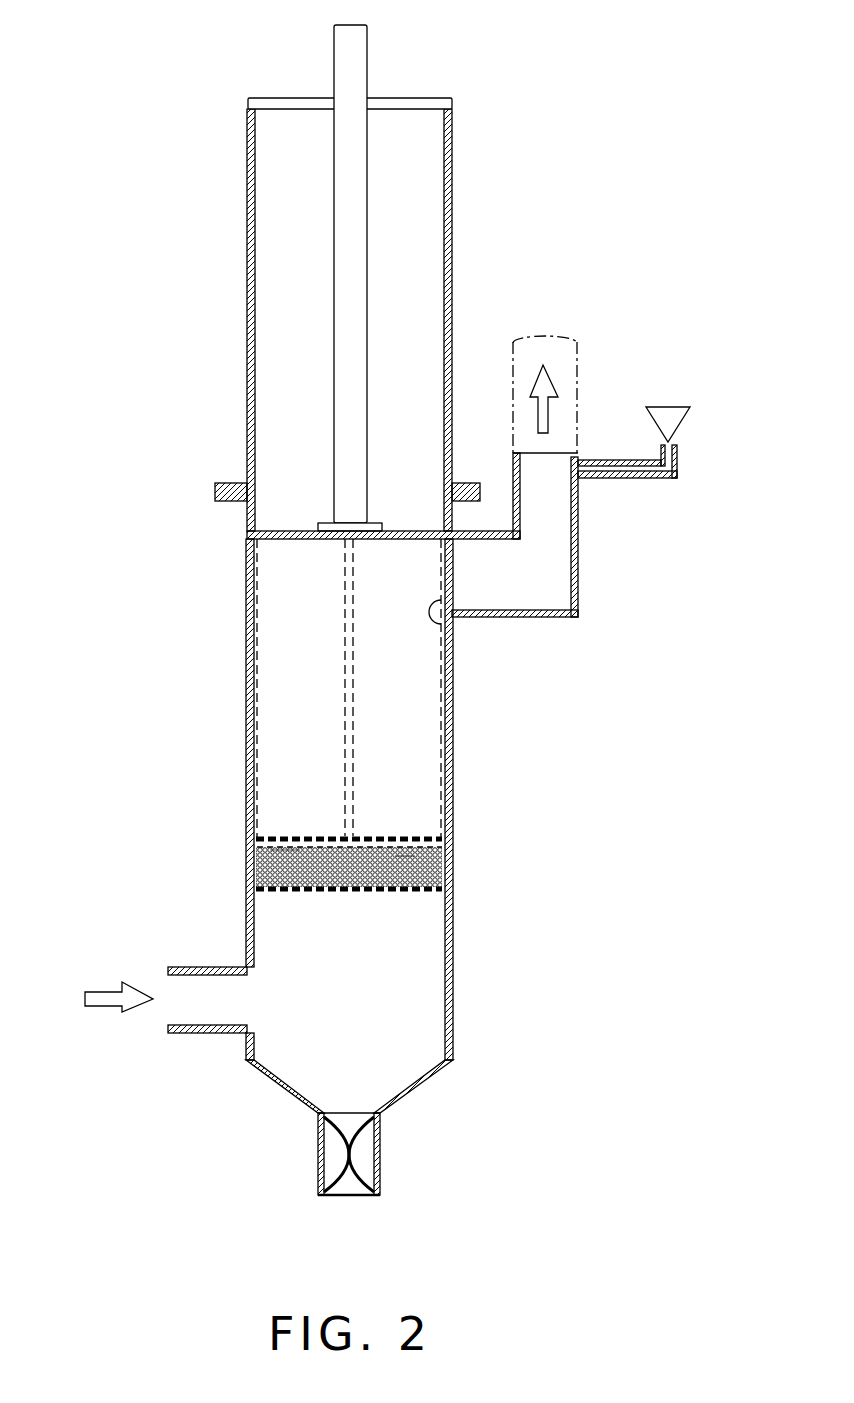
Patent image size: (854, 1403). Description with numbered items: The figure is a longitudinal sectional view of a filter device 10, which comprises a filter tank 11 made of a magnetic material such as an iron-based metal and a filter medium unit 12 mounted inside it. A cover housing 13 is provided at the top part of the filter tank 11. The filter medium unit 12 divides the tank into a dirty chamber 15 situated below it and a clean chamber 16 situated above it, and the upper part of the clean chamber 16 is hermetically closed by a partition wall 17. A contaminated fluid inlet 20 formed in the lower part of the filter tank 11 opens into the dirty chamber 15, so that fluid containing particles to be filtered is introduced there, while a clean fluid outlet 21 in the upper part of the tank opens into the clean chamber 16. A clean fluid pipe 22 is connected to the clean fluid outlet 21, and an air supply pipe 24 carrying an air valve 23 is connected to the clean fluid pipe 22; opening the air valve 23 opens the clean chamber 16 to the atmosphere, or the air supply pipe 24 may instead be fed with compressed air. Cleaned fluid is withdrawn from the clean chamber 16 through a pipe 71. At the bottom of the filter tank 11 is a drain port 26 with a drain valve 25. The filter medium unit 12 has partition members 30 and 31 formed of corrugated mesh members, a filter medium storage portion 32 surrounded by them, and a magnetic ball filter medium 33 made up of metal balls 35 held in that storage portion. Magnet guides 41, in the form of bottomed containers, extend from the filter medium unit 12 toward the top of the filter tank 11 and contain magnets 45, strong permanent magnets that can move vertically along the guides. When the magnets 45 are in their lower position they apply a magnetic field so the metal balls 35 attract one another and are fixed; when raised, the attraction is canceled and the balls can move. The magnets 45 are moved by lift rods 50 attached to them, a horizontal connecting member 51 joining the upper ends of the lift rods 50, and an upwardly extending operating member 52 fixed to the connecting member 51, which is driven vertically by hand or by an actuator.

The filter device 10 is at (512, 93).
The filter tank 11 is at (455, 800).
The filter medium unit 12 is at (390, 866).
The cover housing 13 is at (452, 298).
The dirty chamber 15 is at (333, 1038).
The clean chamber 16 is at (292, 725).
The partition wall 17 is at (290, 530).
The contaminated fluid inlet 20 is at (198, 966).
The clean fluid outlet 21 is at (441, 624).
The clean fluid pipe 22 is at (578, 575).
The air valve 23 is at (673, 425).
The air supply pipe 24 is at (622, 479).
The drain valve 25 is at (350, 1190).
The drain port 26 is at (381, 1155).
The partition member 30 is at (322, 836).
The partition member 31 is at (323, 894).
The filter medium storage portion 32 is at (288, 848).
The magnetic ball filter medium 33 is at (405, 855).
The metal balls 35 is at (405, 888).
The magnet guide 41 is at (428, 735).
The magnet 45 is at (442, 847).
The lift rod 50 is at (358, 690).
The connecting member 51 is at (374, 522).
The operating member 52 is at (360, 340).
The pipe 71 is at (580, 368).